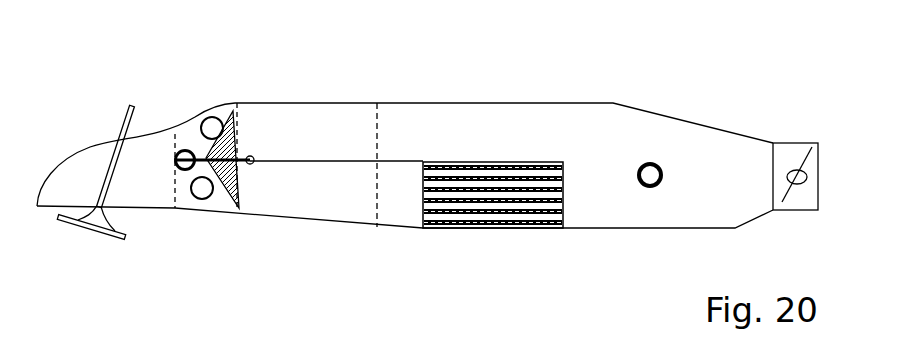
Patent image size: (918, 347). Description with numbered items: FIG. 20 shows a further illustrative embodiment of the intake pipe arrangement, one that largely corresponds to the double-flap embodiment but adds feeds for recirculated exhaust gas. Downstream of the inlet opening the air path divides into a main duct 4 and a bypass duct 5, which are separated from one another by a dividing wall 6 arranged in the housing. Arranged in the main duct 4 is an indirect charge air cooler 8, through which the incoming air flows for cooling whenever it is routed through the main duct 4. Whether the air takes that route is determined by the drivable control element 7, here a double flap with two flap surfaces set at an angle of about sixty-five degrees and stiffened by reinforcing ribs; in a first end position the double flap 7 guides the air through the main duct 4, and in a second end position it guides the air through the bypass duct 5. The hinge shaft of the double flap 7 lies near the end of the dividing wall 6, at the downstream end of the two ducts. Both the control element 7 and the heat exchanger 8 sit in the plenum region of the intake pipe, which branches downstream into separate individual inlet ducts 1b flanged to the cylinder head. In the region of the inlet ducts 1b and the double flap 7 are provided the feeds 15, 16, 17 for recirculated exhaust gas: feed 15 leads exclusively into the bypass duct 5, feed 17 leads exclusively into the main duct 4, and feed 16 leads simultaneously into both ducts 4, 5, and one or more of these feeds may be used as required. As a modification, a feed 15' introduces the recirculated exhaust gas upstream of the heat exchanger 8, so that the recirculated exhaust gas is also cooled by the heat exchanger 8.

The separate individual inlet ducts 1b is at (314, 222).
The main duct 4 is at (389, 204).
The bypass duct 5 is at (415, 125).
The dividing wall 6 is at (328, 160).
The control element 7 is at (238, 110).
The indirect charge air cooler 8 is at (470, 227).
The feed for recirculated exhaust gas 15 is at (208, 87).
The feed for recirculated exhaust gas 15' is at (622, 104).
The feed for recirculated exhaust gas 16 is at (178, 151).
The feed for recirculated exhaust gas 17 is at (204, 199).